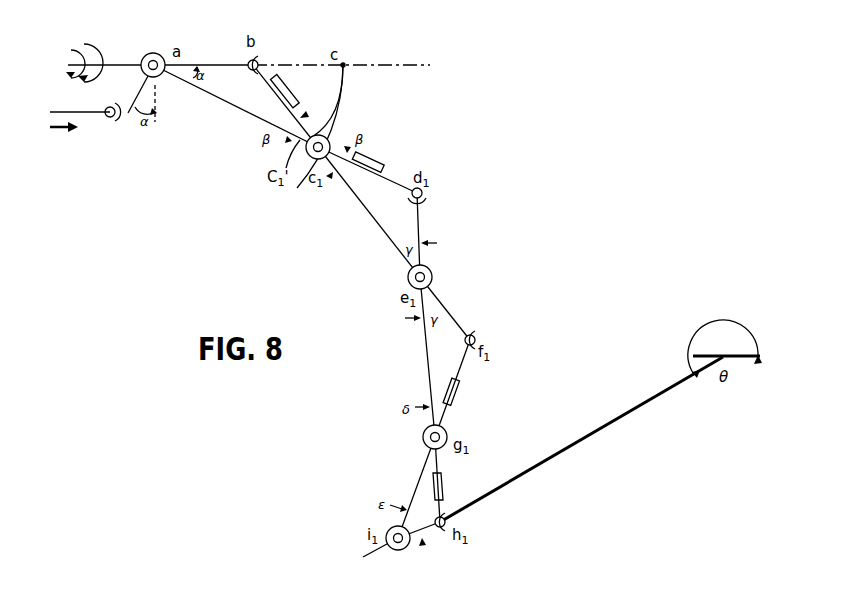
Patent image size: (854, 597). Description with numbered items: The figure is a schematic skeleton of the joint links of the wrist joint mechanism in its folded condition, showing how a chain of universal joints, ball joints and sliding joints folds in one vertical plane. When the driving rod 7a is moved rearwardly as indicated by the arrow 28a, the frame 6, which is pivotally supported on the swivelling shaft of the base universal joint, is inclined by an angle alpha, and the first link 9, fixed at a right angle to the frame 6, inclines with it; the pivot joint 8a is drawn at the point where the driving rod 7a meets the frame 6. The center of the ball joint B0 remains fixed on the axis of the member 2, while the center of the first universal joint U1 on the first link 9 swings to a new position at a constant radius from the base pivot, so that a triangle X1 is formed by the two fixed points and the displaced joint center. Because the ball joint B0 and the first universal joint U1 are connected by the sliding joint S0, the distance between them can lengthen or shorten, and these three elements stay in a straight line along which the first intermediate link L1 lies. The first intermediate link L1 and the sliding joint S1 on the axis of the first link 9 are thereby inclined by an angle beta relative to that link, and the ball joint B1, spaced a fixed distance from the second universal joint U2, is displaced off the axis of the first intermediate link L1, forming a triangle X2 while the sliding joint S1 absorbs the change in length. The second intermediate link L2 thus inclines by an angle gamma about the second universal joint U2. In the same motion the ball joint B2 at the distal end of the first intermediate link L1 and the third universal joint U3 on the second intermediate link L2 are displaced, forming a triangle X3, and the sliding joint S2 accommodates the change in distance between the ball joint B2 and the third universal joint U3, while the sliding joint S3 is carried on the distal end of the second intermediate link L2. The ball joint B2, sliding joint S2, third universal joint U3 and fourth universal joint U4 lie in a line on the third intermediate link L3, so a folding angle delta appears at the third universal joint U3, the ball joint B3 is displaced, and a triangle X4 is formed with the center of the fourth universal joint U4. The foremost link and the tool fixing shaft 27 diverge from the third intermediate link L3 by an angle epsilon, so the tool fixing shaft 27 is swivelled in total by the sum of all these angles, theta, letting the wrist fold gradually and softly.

The member 2 is at (120, 62).
The frame 6 is at (130, 122).
The driving rod 7a is at (90, 117).
The pivot joint 8a is at (113, 123).
The first link 9 is at (217, 97).
The tool fixing shaft 27 is at (363, 557).
The arrow 28a is at (75, 131).
The ball joint B0 is at (257, 60).
The ball joint B1 is at (425, 197).
The ball joint B2 is at (473, 330).
The ball joint B3 is at (443, 533).
The sliding joint S0 is at (287, 92).
The sliding joint S1 is at (377, 167).
The sliding joint S2 is at (457, 395).
The sliding joint S3 is at (447, 482).
The first universal joint U1 is at (312, 160).
The second universal joint U2 is at (402, 273).
The third universal joint U3 is at (420, 437).
The fourth universal joint U4 is at (405, 548).
The first intermediate link L1 is at (357, 205).
The second intermediate link L2 is at (425, 352).
The third intermediate link L3 is at (422, 463).
The triangle X1 is at (256, 110).
The triangle X2 is at (394, 220).
The triangle X3 is at (448, 360).
The triangle X4 is at (425, 487).